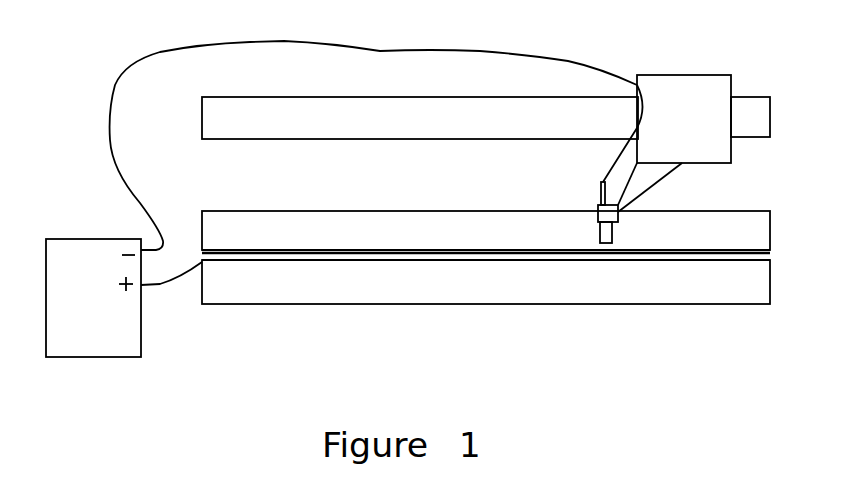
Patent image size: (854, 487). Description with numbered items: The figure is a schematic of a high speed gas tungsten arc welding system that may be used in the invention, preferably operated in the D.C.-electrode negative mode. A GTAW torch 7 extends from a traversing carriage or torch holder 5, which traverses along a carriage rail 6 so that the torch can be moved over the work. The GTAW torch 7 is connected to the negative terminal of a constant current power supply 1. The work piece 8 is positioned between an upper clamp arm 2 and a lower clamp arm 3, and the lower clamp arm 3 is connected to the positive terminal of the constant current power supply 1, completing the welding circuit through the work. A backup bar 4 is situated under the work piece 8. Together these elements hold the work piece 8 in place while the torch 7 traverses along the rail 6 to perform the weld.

The constant current power supply 1 is at (63, 297).
The upper clamp arm 2 is at (236, 229).
The lower clamp arm 3 is at (238, 285).
The backup bar 4 is at (770, 254).
The traversing carriage or torch holder 5 is at (693, 107).
The carriage rail 6 is at (263, 116).
The GTAW torch 7 is at (597, 207).
The work piece 8 is at (362, 257).